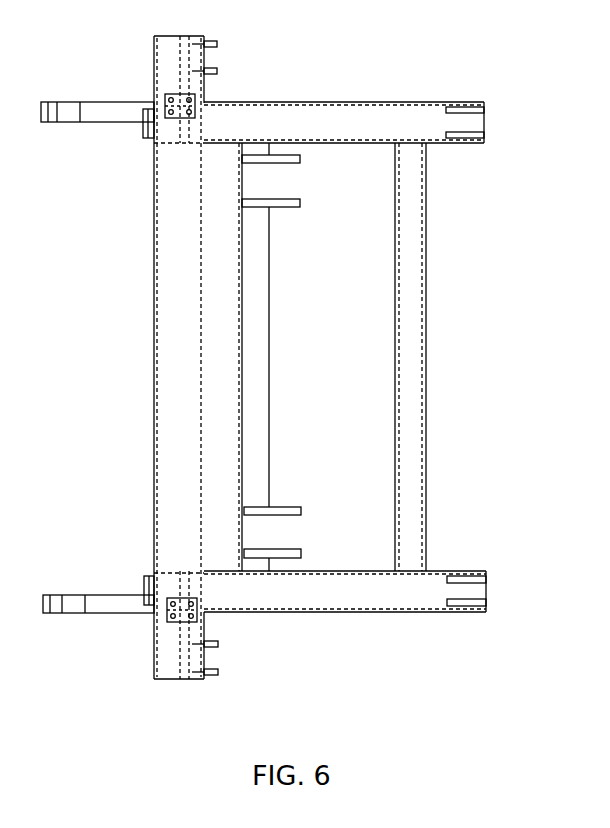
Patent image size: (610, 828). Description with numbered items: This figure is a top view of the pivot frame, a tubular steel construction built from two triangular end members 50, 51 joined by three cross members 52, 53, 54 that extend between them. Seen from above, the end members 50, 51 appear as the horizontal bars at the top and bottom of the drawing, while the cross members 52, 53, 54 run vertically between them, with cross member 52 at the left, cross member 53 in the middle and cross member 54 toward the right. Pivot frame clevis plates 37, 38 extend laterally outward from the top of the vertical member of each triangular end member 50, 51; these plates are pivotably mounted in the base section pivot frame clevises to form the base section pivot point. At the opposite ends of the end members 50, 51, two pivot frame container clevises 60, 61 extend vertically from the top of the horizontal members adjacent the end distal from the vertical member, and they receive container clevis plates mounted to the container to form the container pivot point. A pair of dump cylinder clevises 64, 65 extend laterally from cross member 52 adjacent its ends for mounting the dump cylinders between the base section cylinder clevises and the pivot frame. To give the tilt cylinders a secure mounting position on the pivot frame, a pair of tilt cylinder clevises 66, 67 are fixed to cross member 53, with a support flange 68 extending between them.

The pivot frame clevis plate 37 is at (90, 615).
The pivot frame clevis plate 38 is at (85, 102).
The triangular end member 50 is at (520, 589).
The triangular end member 51 is at (516, 125).
The cross member 52 is at (170, 395).
The cross member 53 is at (225, 285).
The cross member 54 is at (420, 293).
The pivot frame container clevis 60 is at (460, 605).
The pivot frame container clevis 61 is at (455, 110).
The dump cylinder clevis 64 is at (207, 677).
The dump cylinder clevis 65 is at (205, 40).
The tilt cylinder clevis 66 is at (283, 507).
The tilt cylinder clevis 67 is at (280, 208).
The support flange 68 is at (270, 380).